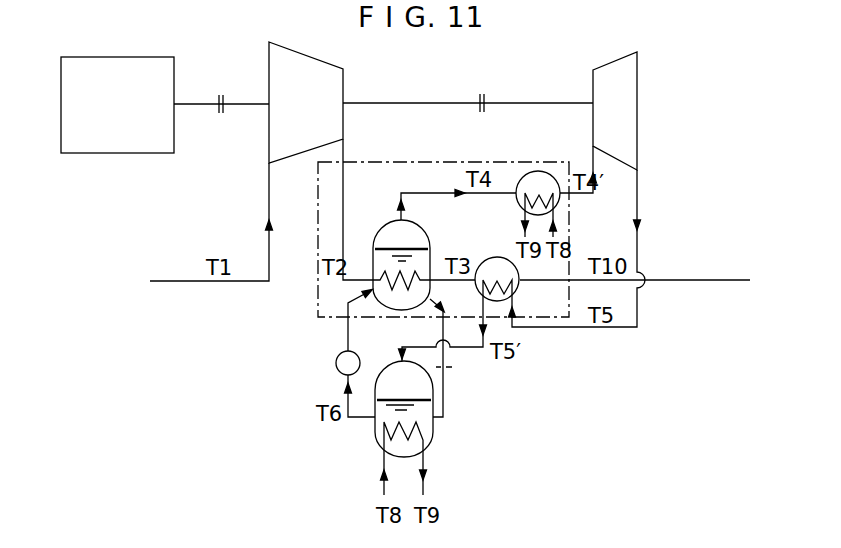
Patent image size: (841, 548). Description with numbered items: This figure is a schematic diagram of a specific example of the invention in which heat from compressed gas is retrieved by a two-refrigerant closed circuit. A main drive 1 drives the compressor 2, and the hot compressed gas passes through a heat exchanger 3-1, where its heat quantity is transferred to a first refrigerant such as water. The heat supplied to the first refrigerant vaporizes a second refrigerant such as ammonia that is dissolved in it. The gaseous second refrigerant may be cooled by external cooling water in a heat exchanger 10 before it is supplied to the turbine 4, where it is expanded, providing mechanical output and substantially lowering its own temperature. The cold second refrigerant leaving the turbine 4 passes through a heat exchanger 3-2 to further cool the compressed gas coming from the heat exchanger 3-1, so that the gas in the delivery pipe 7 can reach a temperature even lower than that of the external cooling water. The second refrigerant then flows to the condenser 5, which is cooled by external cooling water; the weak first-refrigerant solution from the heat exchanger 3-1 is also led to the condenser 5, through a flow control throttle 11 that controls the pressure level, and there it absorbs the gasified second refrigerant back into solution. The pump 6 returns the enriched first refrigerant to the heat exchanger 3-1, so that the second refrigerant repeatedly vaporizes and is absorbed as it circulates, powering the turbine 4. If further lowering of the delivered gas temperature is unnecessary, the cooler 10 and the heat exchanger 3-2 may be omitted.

The main drive 1 is at (130, 148).
The compressor 2 is at (333, 86).
The heat exchanger 3-1 is at (420, 232).
The heat exchanger 3-2 is at (491, 258).
The turbine 4 is at (630, 113).
The condenser 5 is at (430, 438).
The pump 6 is at (336, 364).
The delivery pipe 7 is at (683, 280).
The heat exchanger 10 is at (531, 172).
The flow control throttle 11 is at (451, 372).